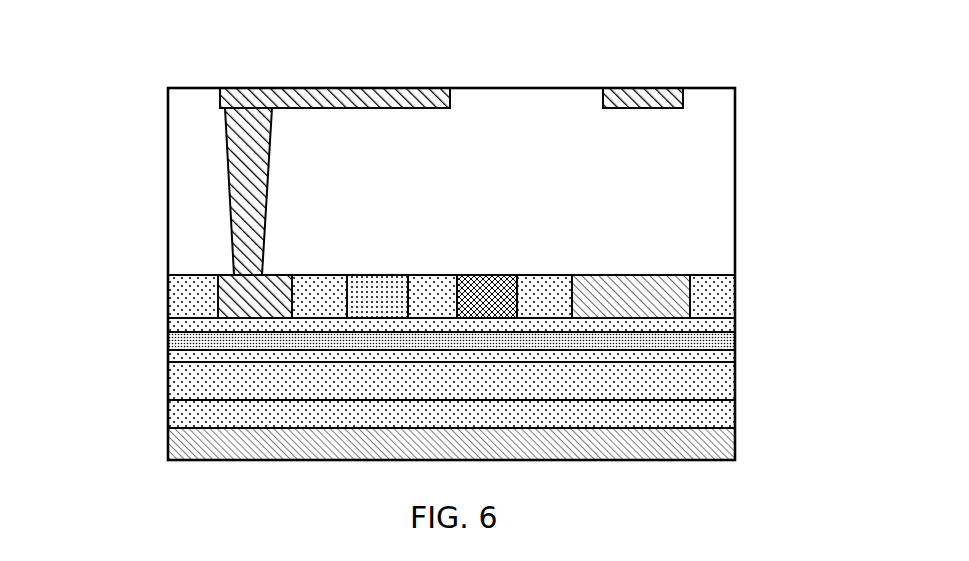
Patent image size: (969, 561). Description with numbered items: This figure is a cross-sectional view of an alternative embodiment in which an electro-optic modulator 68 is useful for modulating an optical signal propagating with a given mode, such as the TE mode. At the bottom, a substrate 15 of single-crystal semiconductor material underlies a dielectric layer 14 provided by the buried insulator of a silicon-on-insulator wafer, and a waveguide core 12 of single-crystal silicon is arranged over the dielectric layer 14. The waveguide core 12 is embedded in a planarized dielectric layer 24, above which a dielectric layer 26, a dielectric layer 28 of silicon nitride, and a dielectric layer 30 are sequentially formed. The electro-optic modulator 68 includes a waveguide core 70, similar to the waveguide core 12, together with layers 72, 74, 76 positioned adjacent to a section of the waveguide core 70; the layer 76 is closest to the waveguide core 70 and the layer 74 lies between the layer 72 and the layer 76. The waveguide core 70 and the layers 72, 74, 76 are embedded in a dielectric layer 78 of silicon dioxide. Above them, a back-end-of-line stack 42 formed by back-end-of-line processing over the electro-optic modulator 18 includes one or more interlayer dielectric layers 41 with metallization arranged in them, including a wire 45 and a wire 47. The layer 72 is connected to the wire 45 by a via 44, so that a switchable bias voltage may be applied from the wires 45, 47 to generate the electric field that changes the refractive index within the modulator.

The electro-optic modulator 68 is at (145, 66).
The back-end-of-line stack 42 is at (744, 130).
The interlayer dielectric layer 41 is at (717, 208).
The electro-optic modulator 18 is at (510, 176).
The wire 45 is at (450, 100).
The wire 47 is at (603, 105).
The via 44 is at (262, 152).
The dielectric layer 78 is at (710, 297).
The layer 72 is at (275, 295).
The layer 74 is at (375, 297).
The layer 76 is at (487, 298).
The waveguide core 70 is at (628, 298).
The dielectric layer 30 is at (207, 325).
The dielectric layer 28 is at (717, 340).
The dielectric layer 26 is at (207, 357).
The dielectric layer 24 is at (710, 373).
The waveguide core 12 is at (406, 372).
The dielectric layer 14 is at (717, 420).
The substrate 15 is at (717, 445).